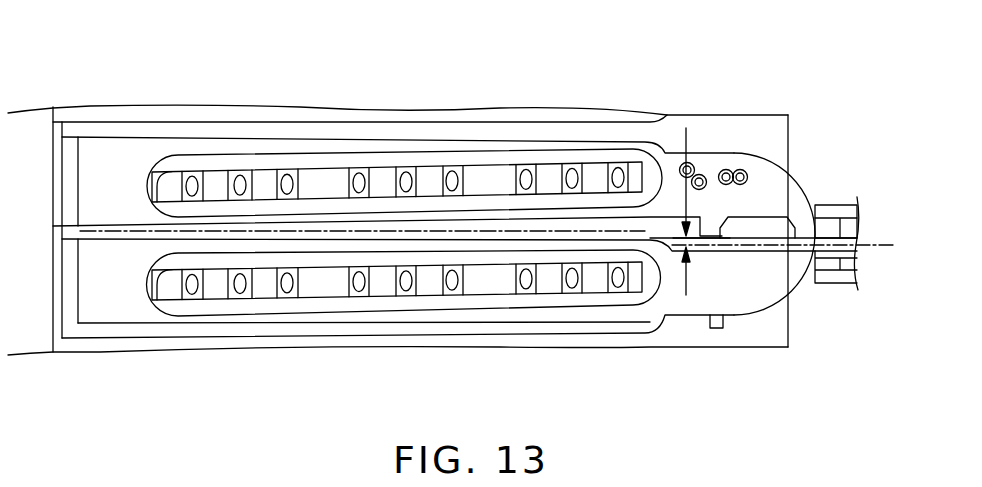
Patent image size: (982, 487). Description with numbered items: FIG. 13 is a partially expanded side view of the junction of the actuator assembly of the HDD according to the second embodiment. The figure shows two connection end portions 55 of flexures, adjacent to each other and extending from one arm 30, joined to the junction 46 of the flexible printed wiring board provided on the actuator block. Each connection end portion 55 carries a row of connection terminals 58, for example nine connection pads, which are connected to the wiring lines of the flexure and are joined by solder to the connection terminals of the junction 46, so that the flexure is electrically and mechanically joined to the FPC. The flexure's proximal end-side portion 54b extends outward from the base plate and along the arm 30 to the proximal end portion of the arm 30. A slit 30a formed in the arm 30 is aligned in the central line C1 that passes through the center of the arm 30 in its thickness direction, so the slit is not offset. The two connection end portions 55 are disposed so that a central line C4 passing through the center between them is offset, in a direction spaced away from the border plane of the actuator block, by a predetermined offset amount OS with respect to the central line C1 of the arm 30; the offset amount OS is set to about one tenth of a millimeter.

The junction 46 is at (121, 136).
The connection end portion 55 is at (242, 147).
The connection terminal 58 is at (452, 175).
The arm 30 is at (826, 212).
The slit 30a is at (841, 232).
The proximal end-side portion 54b is at (837, 254).
The central line C1 is at (877, 248).
The central line C4 is at (106, 225).
The offset amount OS is at (688, 140).